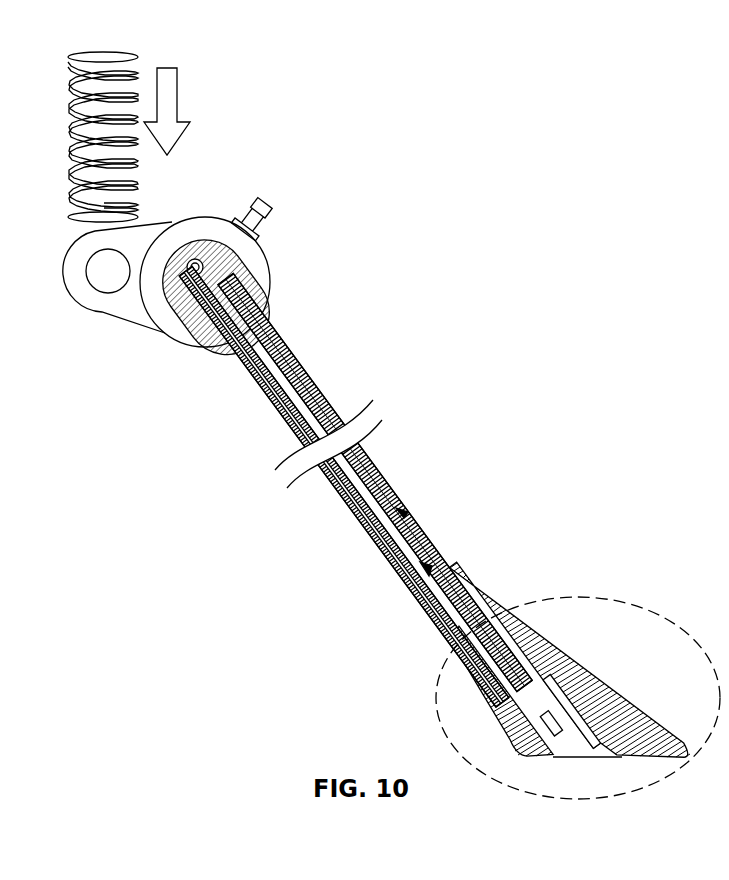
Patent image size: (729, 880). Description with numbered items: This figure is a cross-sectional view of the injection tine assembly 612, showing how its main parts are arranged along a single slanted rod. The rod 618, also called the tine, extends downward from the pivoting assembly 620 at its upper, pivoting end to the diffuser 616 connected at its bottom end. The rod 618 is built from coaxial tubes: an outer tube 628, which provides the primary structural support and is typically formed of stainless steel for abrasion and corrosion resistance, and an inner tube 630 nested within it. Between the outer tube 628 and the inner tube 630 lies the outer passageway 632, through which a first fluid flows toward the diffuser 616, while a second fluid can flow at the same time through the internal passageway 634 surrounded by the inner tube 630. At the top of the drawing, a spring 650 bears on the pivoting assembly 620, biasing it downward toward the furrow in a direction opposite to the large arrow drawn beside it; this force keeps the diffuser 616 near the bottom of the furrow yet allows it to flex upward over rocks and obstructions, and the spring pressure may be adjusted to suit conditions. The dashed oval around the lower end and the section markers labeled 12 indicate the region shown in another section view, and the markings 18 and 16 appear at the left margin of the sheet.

The injection tine assembly 612 is at (377, 491).
The diffuser 616 is at (617, 700).
The rod 618 is at (380, 444).
The pivoting assembly 620 is at (206, 214).
The outer tube 628 is at (287, 348).
The inner tube 630 is at (297, 387).
The outer passageway 632 is at (400, 500).
The internal passageway 634 is at (426, 572).
The spring 650 is at (70, 118).
The section line 12 is at (497, 607).
The reference 18 is at (15, 526).
The reference 16 is at (15, 701).